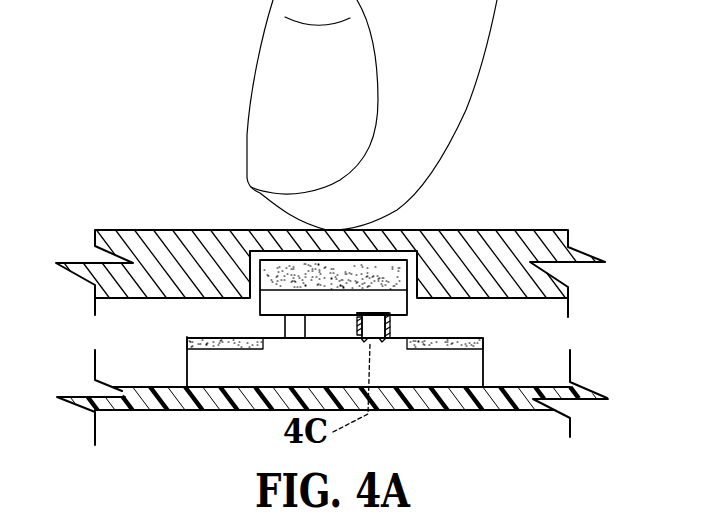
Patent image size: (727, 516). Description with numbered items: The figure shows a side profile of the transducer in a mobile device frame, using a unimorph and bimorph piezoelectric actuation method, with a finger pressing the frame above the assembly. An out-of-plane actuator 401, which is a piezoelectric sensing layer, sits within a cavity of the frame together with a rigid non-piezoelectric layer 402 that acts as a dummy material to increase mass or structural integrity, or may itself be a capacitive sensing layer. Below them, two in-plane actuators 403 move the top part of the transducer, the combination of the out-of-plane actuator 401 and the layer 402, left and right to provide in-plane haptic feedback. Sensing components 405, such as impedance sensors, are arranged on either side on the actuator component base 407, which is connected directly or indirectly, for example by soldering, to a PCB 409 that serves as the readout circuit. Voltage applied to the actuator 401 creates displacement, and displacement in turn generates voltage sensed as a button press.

The out-of-plane actuator 401 is at (427, 272).
The non-piezoelectric layer 402 is at (410, 303).
The in-plane actuator 403 is at (285, 325).
The sensing component 405 is at (215, 349).
The actuator component base 407 is at (483, 372).
The PCB 409 is at (402, 412).